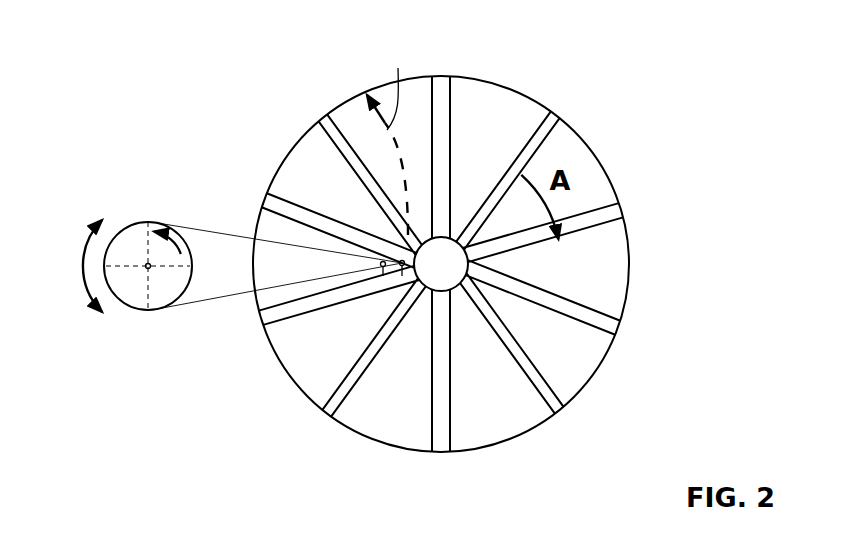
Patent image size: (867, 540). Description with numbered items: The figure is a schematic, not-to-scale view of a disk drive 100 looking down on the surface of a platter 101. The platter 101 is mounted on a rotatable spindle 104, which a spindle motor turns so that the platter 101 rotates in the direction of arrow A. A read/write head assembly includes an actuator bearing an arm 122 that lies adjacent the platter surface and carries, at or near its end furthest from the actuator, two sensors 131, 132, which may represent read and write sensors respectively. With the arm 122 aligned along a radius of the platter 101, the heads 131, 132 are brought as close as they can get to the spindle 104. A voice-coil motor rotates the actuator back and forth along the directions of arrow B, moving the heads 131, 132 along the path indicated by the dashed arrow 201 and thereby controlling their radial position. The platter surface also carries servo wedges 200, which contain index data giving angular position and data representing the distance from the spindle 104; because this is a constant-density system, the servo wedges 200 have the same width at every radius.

The disk drive 100 is at (178, 43).
The platter 101 is at (377, 87).
The spindle 104 is at (441, 260).
The arm 122 is at (178, 223).
The sensor 131 is at (403, 276).
The sensor 132 is at (383, 276).
The servo wedge 200 is at (440, 77).
The dashed arrow 201 is at (398, 84).